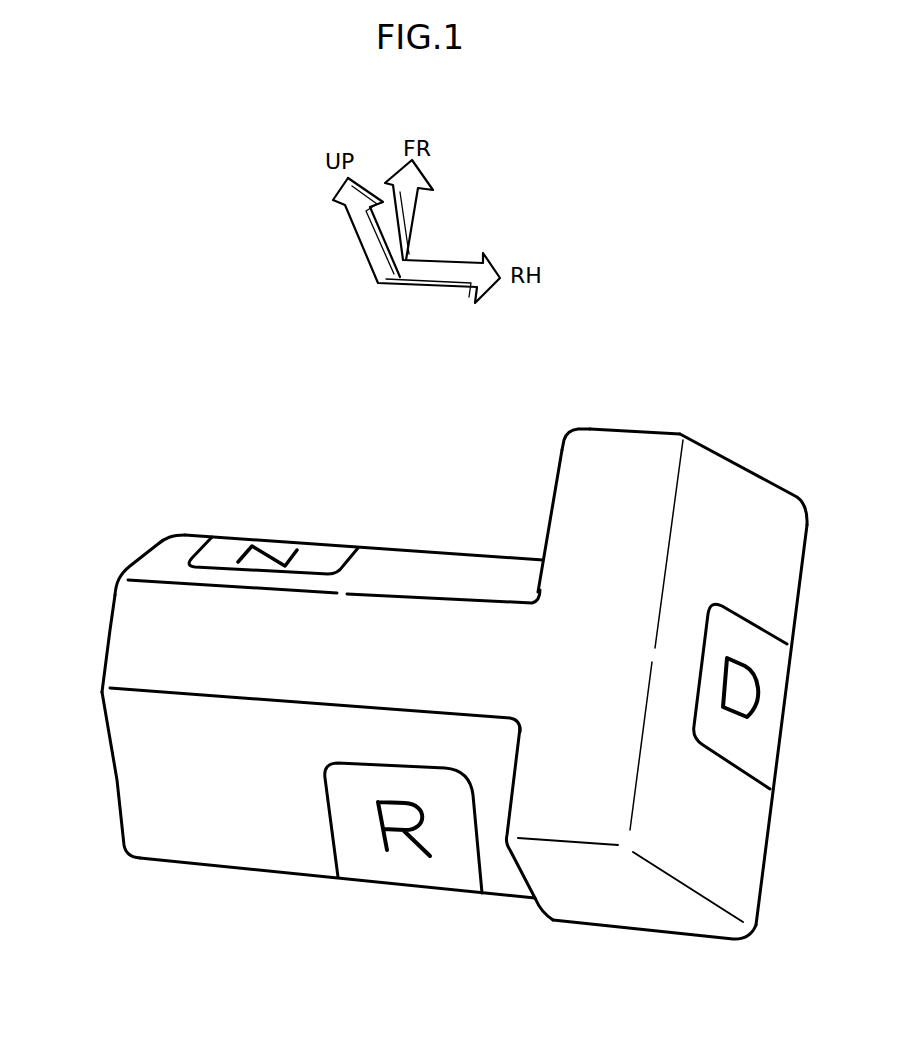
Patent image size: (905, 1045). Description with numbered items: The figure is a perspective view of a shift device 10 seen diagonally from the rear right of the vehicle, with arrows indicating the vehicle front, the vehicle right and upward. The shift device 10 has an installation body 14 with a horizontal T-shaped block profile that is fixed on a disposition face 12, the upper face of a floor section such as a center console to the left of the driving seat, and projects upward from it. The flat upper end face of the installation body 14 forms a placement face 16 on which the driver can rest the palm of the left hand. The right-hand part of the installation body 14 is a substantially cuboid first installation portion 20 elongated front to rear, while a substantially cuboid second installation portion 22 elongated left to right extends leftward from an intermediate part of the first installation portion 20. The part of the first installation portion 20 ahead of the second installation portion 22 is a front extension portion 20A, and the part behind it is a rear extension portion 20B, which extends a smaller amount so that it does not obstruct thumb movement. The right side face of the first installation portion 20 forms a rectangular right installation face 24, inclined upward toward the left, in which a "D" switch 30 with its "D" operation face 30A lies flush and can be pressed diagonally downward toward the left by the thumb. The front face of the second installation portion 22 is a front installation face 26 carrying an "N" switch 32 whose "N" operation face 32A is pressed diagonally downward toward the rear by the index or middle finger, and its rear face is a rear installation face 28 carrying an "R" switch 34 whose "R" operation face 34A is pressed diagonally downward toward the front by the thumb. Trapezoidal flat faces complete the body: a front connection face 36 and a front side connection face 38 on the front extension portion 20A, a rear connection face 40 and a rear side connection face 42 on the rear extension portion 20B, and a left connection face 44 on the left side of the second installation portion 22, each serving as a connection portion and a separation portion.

The shift device 10 is at (214, 372).
The disposition face 12 is at (388, 467).
The installation body 14 is at (622, 427).
The placement face 16 is at (578, 470).
The first installation portion 20 is at (722, 455).
The front extension portion 20A is at (583, 423).
The rear extension portion 20B is at (607, 930).
The second installation portion 22 is at (108, 633).
The right installation face 24 is at (767, 497).
The front installation face 26 is at (442, 565).
The rear installation face 28 is at (203, 842).
The "D" switch 30 is at (753, 623).
The "D" operation face 30A is at (772, 677).
The "N" switch 32 is at (200, 547).
The "N" operation face 32A is at (323, 553).
The "R" switch 34 is at (328, 825).
The "R" operation face 34A is at (432, 870).
The front connection face 36 is at (653, 430).
The front side connection face 38 is at (552, 513).
The rear connection face 40 is at (665, 913).
The rear side connection face 42 is at (522, 868).
The left connection face 44 is at (115, 782).